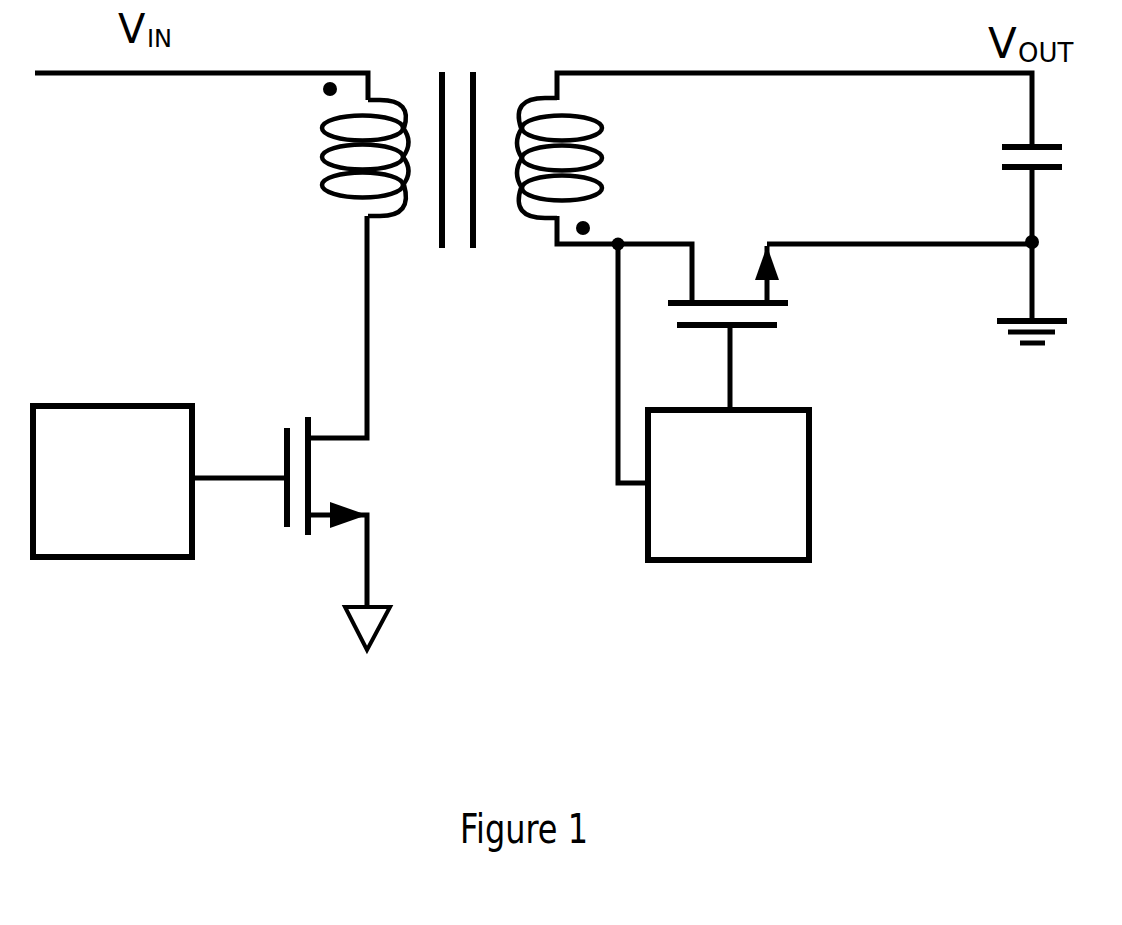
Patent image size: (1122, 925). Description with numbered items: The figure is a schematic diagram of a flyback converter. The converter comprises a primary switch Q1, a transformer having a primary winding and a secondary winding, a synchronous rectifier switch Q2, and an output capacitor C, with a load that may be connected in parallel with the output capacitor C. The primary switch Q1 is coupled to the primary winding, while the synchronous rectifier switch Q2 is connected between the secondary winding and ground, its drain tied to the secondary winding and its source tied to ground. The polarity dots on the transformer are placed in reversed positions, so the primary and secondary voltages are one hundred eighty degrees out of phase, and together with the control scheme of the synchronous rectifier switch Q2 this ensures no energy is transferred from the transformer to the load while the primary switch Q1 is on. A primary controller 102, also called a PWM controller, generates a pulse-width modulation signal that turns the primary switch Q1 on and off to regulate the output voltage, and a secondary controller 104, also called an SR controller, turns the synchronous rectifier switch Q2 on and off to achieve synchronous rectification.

The primary controller 102 is at (92, 560).
The secondary controller 104 is at (715, 563).
The primary switch Q1 is at (292, 433).
The synchronous rectifier switch Q2 is at (726, 302).
The output capacitor C is at (1006, 157).